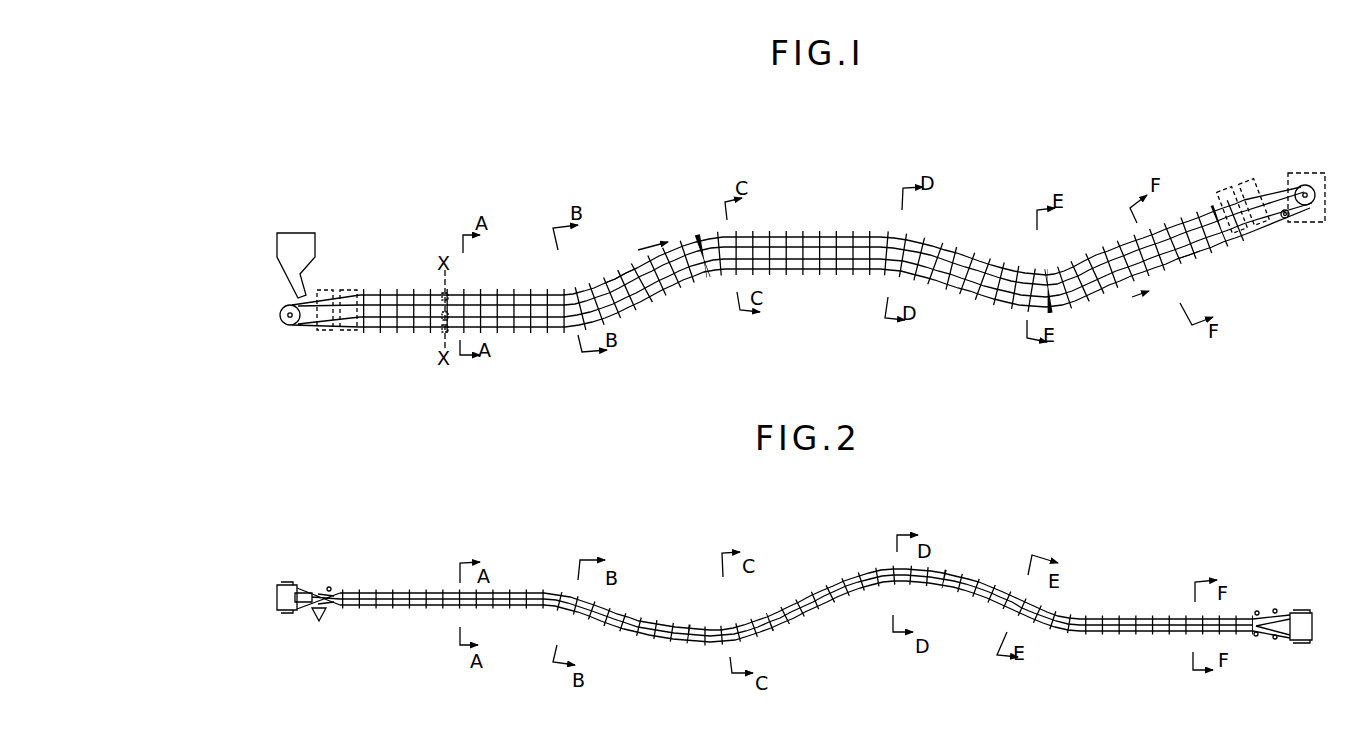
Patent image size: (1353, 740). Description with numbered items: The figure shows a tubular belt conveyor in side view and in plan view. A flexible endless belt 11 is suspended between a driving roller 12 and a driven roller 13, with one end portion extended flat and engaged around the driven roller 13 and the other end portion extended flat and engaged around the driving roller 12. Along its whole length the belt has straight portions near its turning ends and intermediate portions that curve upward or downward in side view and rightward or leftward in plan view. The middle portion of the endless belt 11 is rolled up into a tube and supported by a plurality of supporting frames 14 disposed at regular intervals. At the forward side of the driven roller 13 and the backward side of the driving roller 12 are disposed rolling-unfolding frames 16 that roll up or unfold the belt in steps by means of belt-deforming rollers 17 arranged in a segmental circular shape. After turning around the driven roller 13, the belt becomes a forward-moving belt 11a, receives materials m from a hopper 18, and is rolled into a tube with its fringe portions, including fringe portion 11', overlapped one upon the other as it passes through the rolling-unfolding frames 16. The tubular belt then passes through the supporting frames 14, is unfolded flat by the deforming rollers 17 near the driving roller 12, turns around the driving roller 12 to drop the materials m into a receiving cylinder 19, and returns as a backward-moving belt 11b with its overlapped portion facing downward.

In FIG. 1, the endless belt 11 is at (802, 249).
In FIG. 2, the endless belt 11 is at (793, 590).
In FIG. 1, the forward-moving belt 11a is at (628, 268).
In FIG. 1, the backward-moving belt 11b is at (1190, 262).
In FIG. 2, the fringe portion 11' is at (353, 575).
In FIG. 1, the driving roller 12 is at (1310, 206).
In FIG. 2, the driving roller 12 is at (1312, 611).
In FIG. 1, the driven roller 13 is at (287, 327).
In FIG. 2, the driven roller 13 is at (284, 613).
In FIG. 1, the supporting frame 14 is at (584, 291).
In FIG. 2, the supporting frame 14 is at (437, 610).
In FIG. 1, the rolling-unfolding frame 16 is at (349, 290).
In FIG. 2, the belt-deforming roller 17 is at (324, 616).
In FIG. 1, the hopper 18 is at (293, 252).
In FIG. 1, the receiving cylinder 19 is at (1310, 172).
In FIG. 2, the materials m is at (325, 590).